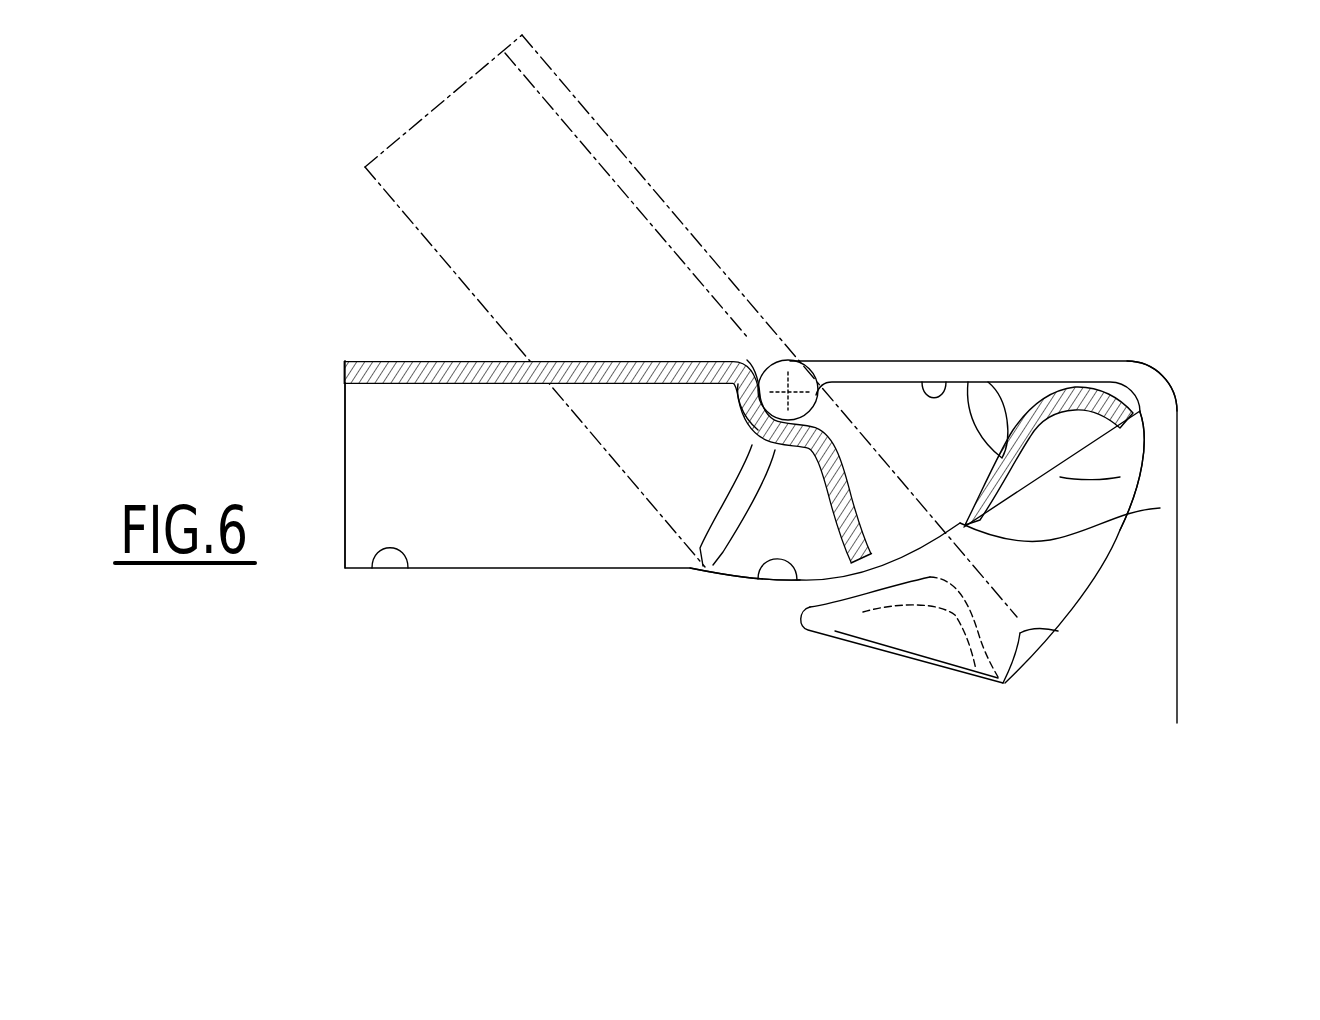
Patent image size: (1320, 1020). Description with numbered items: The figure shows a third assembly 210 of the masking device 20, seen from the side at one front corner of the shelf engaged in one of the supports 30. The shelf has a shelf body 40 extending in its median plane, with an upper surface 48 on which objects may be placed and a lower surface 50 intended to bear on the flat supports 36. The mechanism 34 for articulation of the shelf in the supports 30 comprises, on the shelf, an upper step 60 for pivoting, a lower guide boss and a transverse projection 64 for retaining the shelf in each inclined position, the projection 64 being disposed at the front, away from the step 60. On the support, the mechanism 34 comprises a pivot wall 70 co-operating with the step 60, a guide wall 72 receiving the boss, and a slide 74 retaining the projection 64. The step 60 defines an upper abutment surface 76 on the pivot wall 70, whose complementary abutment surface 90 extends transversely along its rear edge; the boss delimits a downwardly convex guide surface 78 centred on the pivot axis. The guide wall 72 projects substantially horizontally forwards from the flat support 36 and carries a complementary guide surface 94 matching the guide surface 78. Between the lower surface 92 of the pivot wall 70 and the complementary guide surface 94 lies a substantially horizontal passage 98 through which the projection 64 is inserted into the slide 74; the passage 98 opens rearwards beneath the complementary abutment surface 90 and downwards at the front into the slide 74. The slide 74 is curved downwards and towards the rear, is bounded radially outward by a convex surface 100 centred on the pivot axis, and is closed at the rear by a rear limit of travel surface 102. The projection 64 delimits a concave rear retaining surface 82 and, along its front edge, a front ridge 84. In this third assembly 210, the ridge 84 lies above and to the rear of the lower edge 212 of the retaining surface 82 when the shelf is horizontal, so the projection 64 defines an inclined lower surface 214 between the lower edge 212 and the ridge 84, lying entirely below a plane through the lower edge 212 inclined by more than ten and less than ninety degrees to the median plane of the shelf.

The masking device 20 is at (320, 182).
The third assembly 210 is at (175, 197).
The support 30 is at (553, 603).
The mechanism for articulation of the shelf 34 is at (760, 752).
The flat support 36 is at (375, 568).
The shelf body 40 is at (493, 412).
The upper surface 48 is at (392, 363).
The lower surface 50 is at (472, 569).
The upper step 60 is at (800, 314).
The transverse projection 64 is at (1105, 398).
The pivot wall 70 is at (893, 372).
The guide wall 72 is at (849, 587).
The slide 74 is at (1055, 577).
The upper abutment surface 76 is at (757, 428).
The guide surface 78 is at (733, 570).
The concave rear surface 82 is at (970, 395).
The front ridge 84 is at (1137, 418).
The complementary abutment surface 90 is at (752, 330).
The lower surface 92 is at (940, 385).
The complementary guide surface 94 is at (757, 575).
The passage 98 is at (943, 467).
The convex surface 100 is at (1022, 640).
The rear limit of travel surface 102 is at (910, 663).
The lower edge 212 is at (1160, 508).
The inclined lower surface 214 is at (1060, 477).